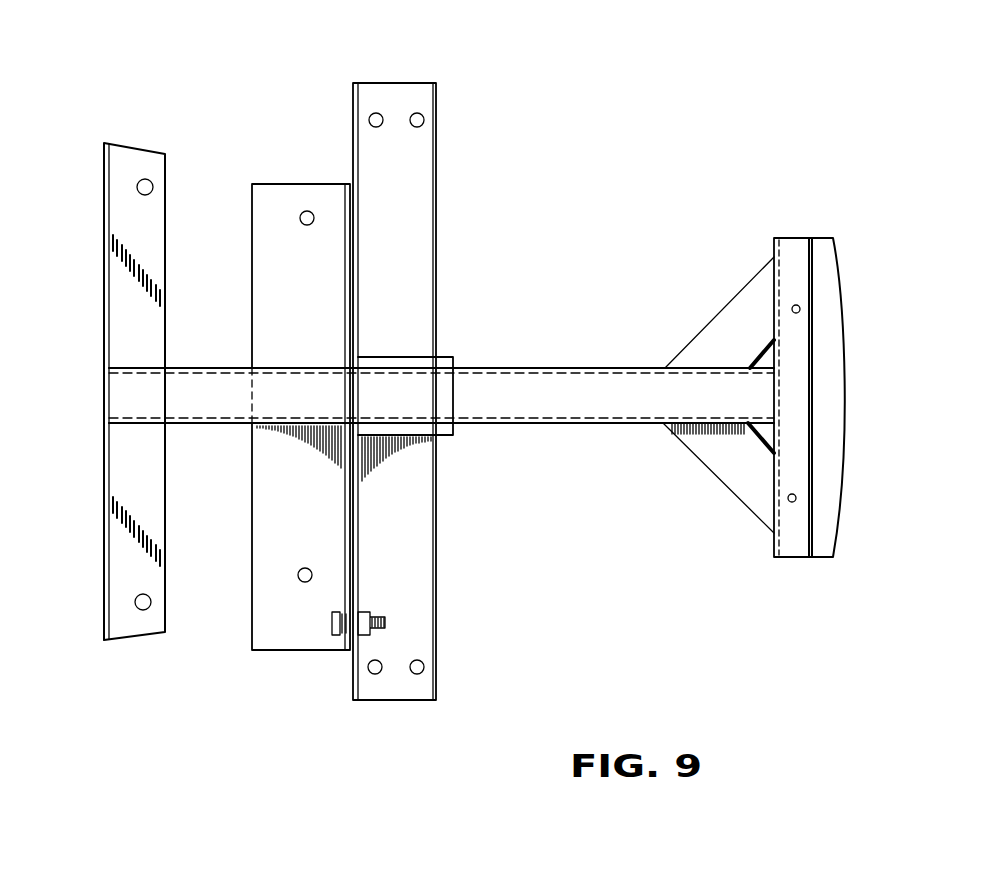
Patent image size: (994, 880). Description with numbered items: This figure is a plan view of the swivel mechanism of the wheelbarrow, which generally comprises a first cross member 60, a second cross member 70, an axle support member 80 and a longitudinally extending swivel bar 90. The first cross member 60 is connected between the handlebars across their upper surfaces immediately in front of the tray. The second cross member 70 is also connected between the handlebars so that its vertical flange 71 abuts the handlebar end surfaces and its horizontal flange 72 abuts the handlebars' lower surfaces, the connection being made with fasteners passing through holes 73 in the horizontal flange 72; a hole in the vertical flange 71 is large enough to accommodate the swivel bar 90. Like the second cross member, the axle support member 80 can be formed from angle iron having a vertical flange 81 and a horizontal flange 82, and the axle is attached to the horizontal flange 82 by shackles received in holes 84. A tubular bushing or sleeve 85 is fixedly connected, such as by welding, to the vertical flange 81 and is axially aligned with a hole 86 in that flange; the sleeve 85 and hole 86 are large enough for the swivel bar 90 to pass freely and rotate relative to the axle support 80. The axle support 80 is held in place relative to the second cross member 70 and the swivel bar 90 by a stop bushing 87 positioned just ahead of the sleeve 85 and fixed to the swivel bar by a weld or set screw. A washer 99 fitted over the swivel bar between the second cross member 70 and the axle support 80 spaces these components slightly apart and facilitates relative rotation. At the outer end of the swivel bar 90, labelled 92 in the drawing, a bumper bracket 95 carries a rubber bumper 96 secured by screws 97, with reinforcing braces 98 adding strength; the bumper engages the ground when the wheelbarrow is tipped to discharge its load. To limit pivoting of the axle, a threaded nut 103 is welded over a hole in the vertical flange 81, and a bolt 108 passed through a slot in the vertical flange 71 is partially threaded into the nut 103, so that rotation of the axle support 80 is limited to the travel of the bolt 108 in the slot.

The first cross member 60 is at (128, 627).
The second cross member 70 is at (282, 638).
The vertical flange 71 is at (345, 500).
The horizontal flange 72 is at (258, 592).
The holes 73 is at (305, 210).
The axle support member 80 is at (405, 688).
The vertical flange 81 is at (360, 303).
The horizontal flange 82 is at (410, 527).
The holes 84 is at (417, 113).
The tubular bushing or sleeve 85 is at (402, 380).
The hole 86 is at (360, 390).
The stop bushing 87 is at (442, 385).
The swivel bar 90 is at (543, 407).
The shaft end 92 is at (128, 423).
The bumper bracket 95 is at (797, 247).
The rubber bumper 96 is at (823, 265).
The screws 97 is at (800, 309).
The reinforcing braces 98 is at (717, 325).
The washer 99 is at (355, 425).
The threaded nut 103 is at (365, 612).
The bolt 108 is at (334, 637).